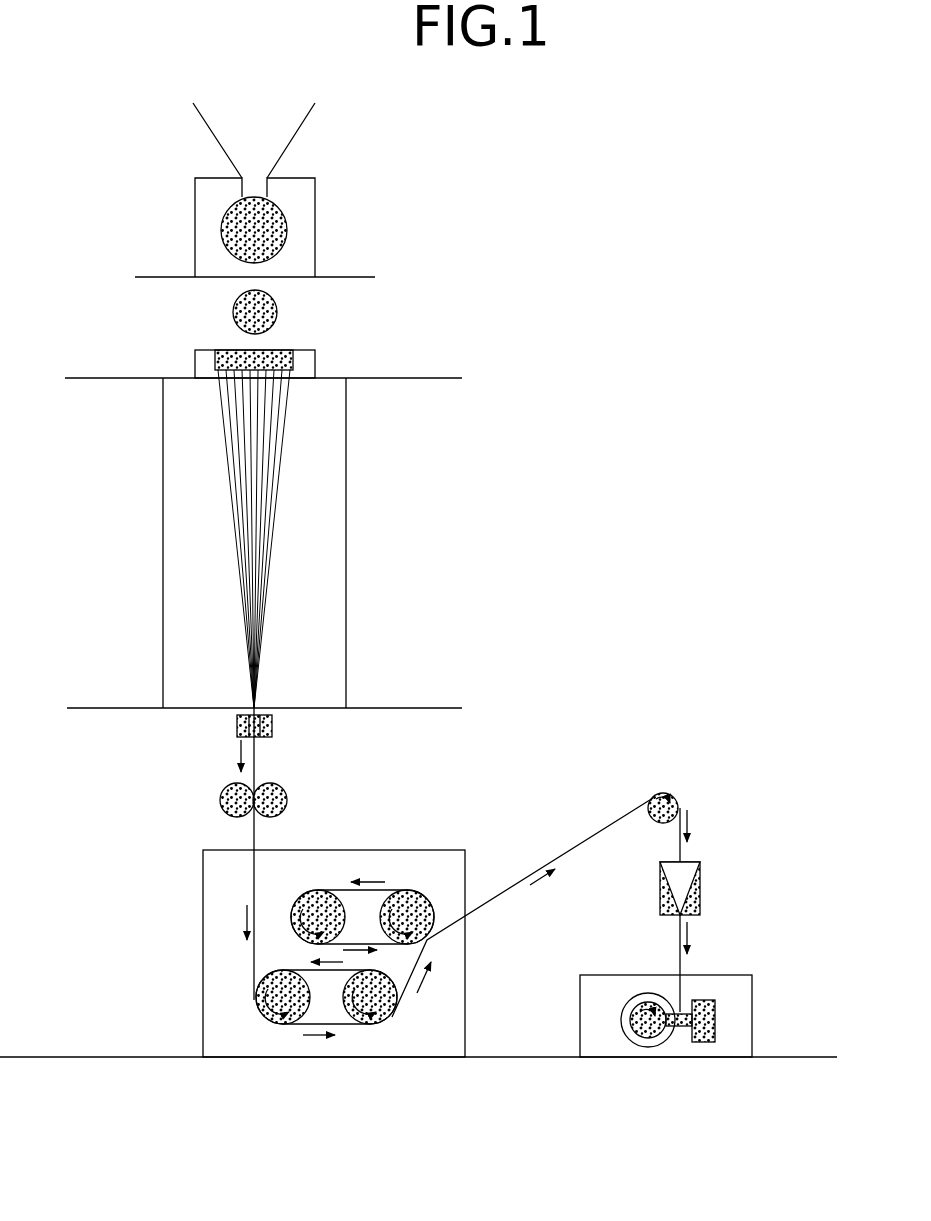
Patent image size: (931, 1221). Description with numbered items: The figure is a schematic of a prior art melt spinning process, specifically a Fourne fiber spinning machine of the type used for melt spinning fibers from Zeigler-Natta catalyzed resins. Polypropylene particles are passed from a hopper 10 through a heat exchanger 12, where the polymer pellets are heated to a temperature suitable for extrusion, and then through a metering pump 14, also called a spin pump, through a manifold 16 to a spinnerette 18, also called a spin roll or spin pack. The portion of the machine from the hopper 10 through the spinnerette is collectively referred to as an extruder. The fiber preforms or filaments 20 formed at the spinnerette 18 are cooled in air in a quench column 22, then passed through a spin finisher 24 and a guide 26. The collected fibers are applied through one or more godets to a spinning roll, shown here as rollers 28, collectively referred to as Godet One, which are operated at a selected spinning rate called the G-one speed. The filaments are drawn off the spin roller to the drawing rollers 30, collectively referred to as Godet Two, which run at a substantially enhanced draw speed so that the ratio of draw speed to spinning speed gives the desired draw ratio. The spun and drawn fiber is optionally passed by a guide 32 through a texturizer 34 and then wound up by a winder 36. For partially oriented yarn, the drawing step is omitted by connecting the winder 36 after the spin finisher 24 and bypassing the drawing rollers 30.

The hopper 10 is at (222, 137).
The heat exchanger 12 is at (315, 203).
The metering pump 14 is at (278, 308).
The manifold 16 is at (232, 350).
The spinnerette 18 is at (315, 350).
The filaments 20 is at (255, 685).
The quench column 22 is at (346, 583).
The spin finisher 24 is at (272, 723).
The guide 26 is at (287, 798).
The rollers 28 is at (257, 1003).
The drawing rollers 30 is at (293, 912).
The guide 32 is at (677, 792).
The texturizer 34 is at (700, 877).
The winder 36 is at (715, 1017).